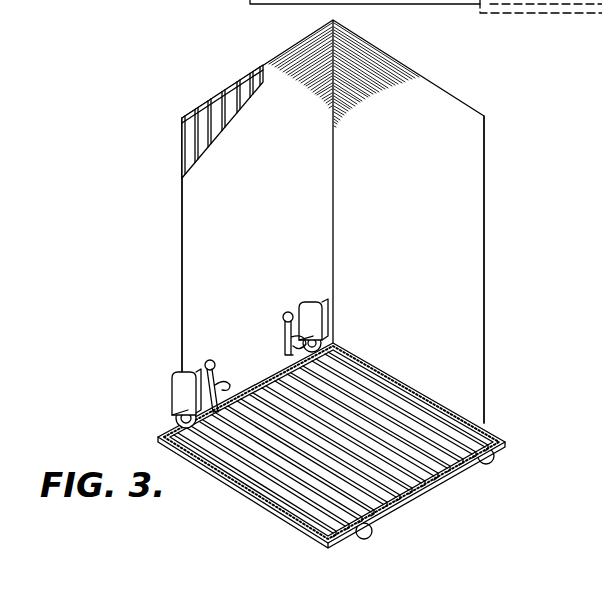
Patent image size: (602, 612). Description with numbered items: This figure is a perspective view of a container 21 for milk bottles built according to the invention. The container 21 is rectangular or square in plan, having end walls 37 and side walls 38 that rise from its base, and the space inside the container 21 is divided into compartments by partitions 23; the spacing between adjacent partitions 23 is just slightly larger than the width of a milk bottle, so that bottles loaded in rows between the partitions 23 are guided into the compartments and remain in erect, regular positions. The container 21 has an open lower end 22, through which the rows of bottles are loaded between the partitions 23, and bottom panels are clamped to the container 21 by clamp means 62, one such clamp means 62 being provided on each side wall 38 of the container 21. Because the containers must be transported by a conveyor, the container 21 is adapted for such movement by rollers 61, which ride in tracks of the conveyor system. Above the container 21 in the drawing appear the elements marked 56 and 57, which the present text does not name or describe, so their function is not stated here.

The container 21 is at (484, 194).
The open lower end 22 is at (410, 414).
The partitions 23 is at (341, 390).
The end wall 37 is at (468, 246).
The side wall 38 is at (200, 283).
The top bar 56 is at (294, 5).
The top member 57 is at (433, 0).
The rollers 61 is at (316, 417).
The clamp means 62 is at (218, 372).